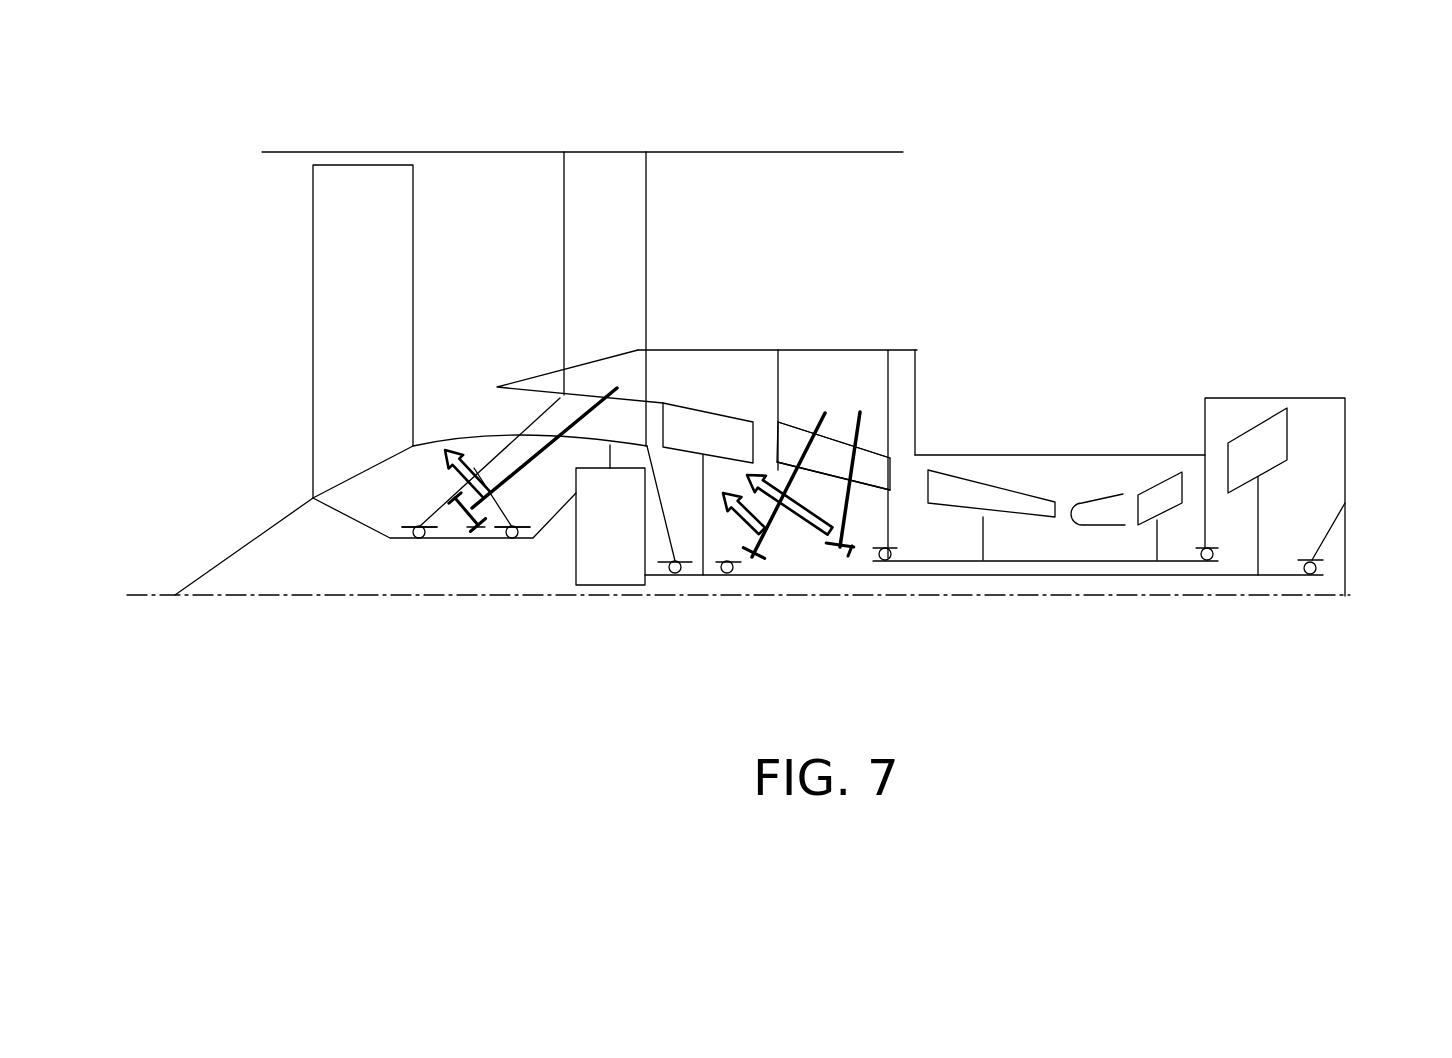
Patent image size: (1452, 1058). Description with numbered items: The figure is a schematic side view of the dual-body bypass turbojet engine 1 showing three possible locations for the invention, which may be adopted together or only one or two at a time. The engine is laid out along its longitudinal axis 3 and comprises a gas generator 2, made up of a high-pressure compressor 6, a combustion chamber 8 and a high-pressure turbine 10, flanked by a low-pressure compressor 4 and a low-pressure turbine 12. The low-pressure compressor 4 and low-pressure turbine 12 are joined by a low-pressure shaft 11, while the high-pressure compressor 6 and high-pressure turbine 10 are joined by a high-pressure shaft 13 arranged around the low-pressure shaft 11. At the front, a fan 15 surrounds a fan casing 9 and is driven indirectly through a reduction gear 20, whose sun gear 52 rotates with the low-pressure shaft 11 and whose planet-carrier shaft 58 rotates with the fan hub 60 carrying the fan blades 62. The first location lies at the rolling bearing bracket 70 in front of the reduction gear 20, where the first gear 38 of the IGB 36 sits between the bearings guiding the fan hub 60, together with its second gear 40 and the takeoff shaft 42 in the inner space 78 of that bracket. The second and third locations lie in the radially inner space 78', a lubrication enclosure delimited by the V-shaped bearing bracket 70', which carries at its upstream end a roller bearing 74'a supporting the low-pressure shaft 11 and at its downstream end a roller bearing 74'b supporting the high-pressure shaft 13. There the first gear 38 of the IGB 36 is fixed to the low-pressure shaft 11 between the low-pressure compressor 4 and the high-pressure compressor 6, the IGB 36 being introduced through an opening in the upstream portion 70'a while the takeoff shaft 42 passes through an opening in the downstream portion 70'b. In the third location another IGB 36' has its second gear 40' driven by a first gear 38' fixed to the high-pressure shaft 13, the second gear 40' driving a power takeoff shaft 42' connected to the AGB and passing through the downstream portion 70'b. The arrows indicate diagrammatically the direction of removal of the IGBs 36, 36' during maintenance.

The turbojet engine 1 is at (495, 125).
The fan casing 9 is at (300, 152).
The fan 15 is at (278, 250).
The fan blades 62 is at (393, 270).
The rolling bearing bracket 70 is at (458, 466).
The movement arrow 40 is at (618, 533).
The takeoff shaft 42 is at (693, 394).
The rod 78 is at (544, 450).
The upstream portion 70'a is at (722, 375).
The low-pressure compressor 4 is at (676, 405).
The bearing bracket 70' is at (752, 375).
The downstream portion 70'b is at (868, 408).
The radially inner space 78' is at (911, 441).
The high-pressure compressor 6 is at (1033, 500).
The gas generator 2 is at (1063, 478).
The combustion chamber 8 is at (1110, 507).
The high-pressure turbine 10 is at (1167, 483).
The low-pressure turbine 12 is at (1272, 425).
The longitudinal axis 3 is at (133, 598).
The IGB 36 is at (621, 535).
The fan hub 60 is at (460, 515).
The first gear 38 is at (628, 631).
The planet-carrier shaft 58 is at (535, 540).
The reduction gear 20 is at (609, 587).
The sun gear 52 is at (675, 573).
The roller bearing 74'a is at (730, 630).
The low-pressure shaft 11 is at (793, 575).
The second gear 40' is at (813, 592).
The IGB 36' is at (867, 610).
The roller bearing 74'b is at (907, 611).
The first gear 38' is at (936, 630).
The power takeoff shaft 42' is at (894, 530).
The high-pressure shaft 13 is at (970, 563).